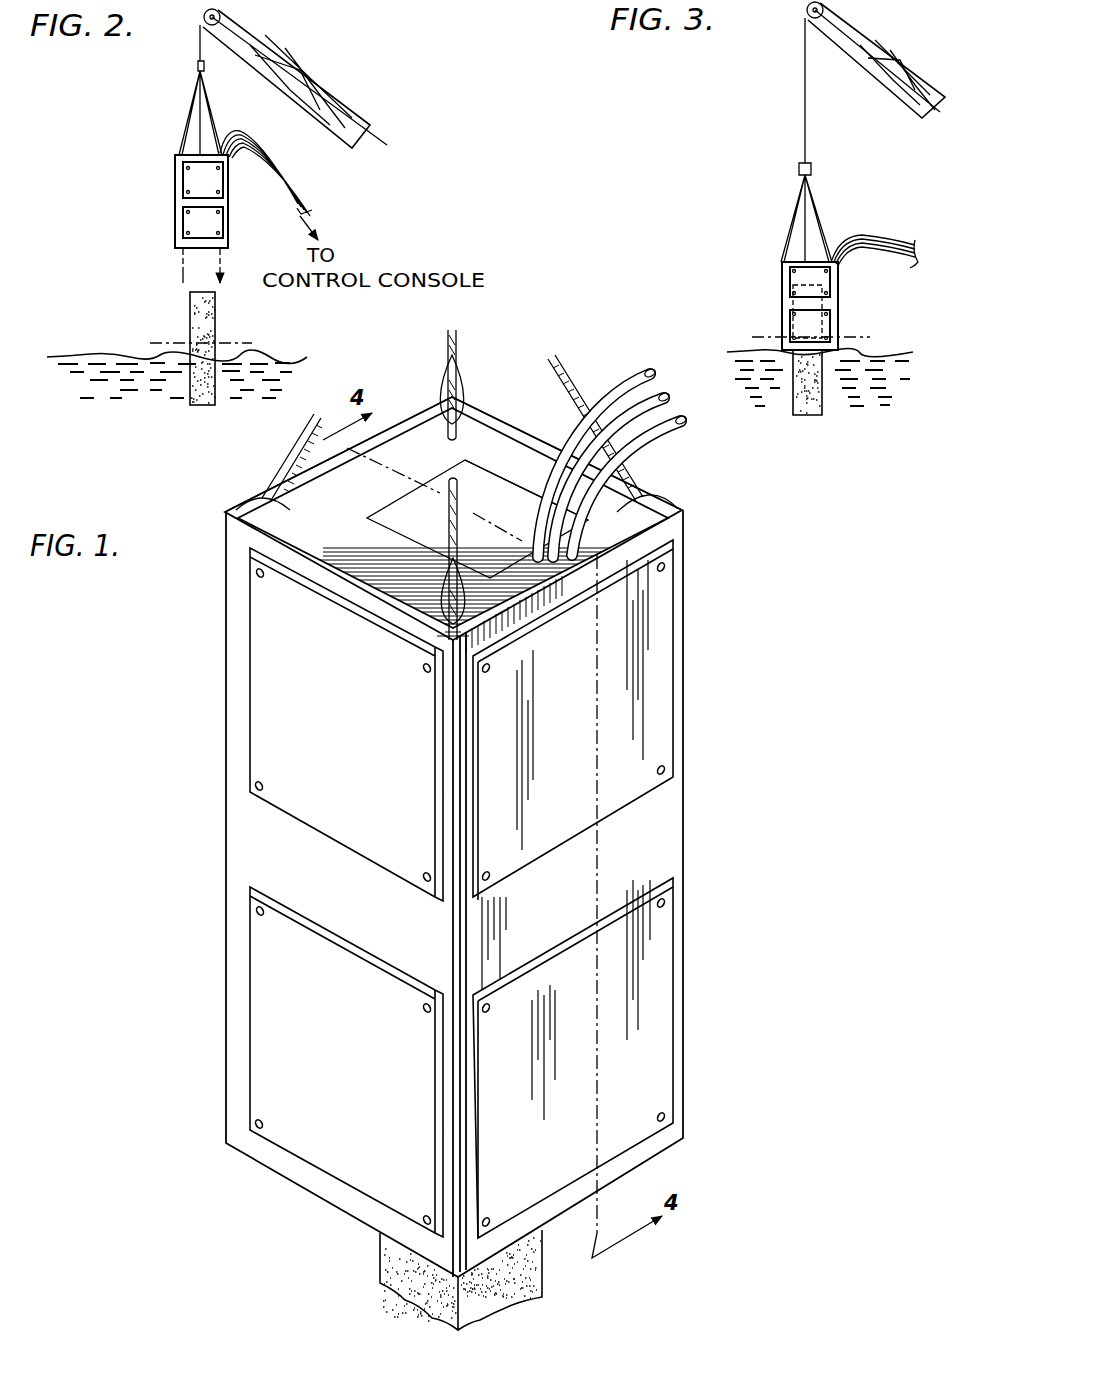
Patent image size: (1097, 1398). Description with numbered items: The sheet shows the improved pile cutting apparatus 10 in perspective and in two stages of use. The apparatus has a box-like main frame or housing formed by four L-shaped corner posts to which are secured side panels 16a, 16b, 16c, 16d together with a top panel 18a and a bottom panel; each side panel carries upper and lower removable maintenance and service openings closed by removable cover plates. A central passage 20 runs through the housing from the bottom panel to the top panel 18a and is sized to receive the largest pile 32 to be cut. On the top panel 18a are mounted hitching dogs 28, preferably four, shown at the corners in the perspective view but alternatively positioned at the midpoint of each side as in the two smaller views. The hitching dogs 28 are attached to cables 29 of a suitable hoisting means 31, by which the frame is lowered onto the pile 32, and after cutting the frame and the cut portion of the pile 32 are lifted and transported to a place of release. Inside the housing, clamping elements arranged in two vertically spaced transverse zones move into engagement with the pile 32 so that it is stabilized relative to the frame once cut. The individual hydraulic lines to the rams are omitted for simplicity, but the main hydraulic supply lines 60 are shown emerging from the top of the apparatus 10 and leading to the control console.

In FIG. 1, the pile cutting apparatus 10 is at (700, 857).
In FIG. 2, the pile cutting apparatus 10 is at (152, 198).
In FIG. 3, the pile cutting apparatus 10 is at (772, 295).
In FIG. 1, the side panel 16a is at (507, 413).
In FIG. 1, the side panel 16b is at (256, 845).
In FIG. 1, the side panel 16c is at (655, 817).
In FIG. 1, the side panel 16d is at (413, 407).
In FIG. 1, the top panel 18a is at (362, 501).
In FIG. 1, the central passage 20 is at (418, 482).
In FIG. 1, the hitching dogs 28 is at (256, 507).
In FIG. 1, the cables 29 is at (458, 343).
In FIG. 3, the hoisting means 31 is at (885, 95).
In FIG. 1, the pile 32 is at (395, 1262).
In FIG. 2, the pile 32 is at (190, 312).
In FIG. 3, the pile 32 is at (807, 382).
In FIG. 1, the main hydraulic supply lines 60 is at (675, 382).